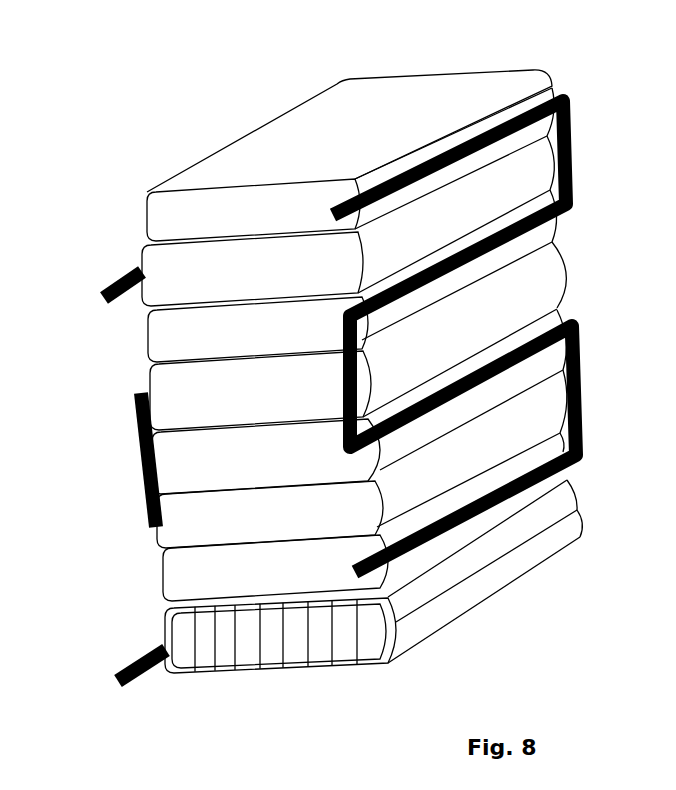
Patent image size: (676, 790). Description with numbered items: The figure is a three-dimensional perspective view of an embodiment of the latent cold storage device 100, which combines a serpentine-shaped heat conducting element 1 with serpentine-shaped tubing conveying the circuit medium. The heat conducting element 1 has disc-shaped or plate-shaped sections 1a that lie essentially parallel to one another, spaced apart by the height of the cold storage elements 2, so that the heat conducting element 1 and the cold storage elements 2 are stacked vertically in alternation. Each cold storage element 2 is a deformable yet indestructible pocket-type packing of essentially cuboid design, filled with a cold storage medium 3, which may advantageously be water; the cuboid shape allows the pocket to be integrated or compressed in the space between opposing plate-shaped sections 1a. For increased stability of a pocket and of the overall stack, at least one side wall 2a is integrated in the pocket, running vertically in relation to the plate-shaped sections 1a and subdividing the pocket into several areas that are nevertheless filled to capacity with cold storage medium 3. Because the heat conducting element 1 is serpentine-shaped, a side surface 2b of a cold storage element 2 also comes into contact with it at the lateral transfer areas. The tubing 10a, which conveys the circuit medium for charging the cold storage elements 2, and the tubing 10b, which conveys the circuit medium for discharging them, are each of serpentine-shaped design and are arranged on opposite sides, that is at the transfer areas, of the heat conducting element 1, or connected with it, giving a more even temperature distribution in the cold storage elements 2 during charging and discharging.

The heat conducting element 1 is at (267, 123).
The plate-shaped section 1a is at (258, 160).
The cold storage element 2 is at (145, 195).
The side wall 2a is at (355, 567).
The side surface 2b is at (538, 283).
The cold storage medium 3 is at (255, 285).
The tubing conveying the circuit medium for charging 10a is at (572, 110).
The tubing conveying the circuit medium for discharging 10b is at (146, 672).
The latent cold storage device 100 is at (548, 588).